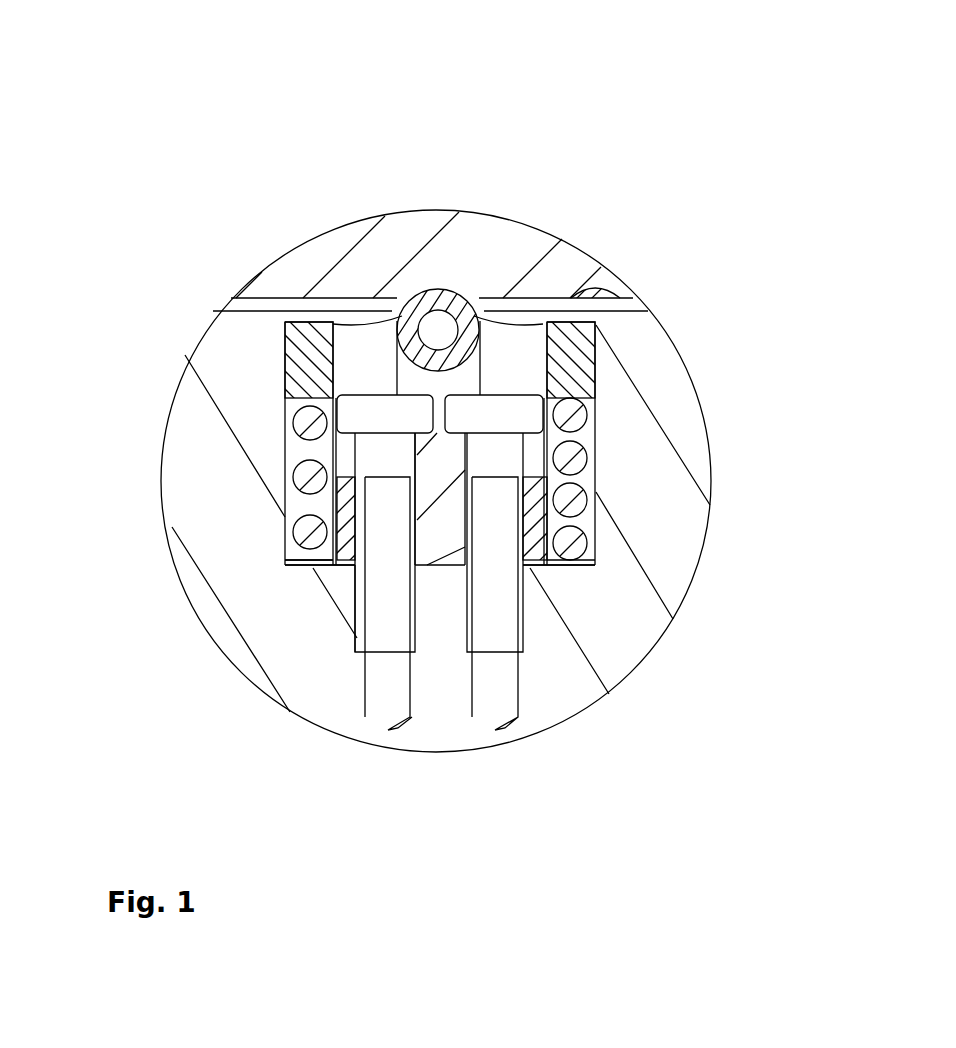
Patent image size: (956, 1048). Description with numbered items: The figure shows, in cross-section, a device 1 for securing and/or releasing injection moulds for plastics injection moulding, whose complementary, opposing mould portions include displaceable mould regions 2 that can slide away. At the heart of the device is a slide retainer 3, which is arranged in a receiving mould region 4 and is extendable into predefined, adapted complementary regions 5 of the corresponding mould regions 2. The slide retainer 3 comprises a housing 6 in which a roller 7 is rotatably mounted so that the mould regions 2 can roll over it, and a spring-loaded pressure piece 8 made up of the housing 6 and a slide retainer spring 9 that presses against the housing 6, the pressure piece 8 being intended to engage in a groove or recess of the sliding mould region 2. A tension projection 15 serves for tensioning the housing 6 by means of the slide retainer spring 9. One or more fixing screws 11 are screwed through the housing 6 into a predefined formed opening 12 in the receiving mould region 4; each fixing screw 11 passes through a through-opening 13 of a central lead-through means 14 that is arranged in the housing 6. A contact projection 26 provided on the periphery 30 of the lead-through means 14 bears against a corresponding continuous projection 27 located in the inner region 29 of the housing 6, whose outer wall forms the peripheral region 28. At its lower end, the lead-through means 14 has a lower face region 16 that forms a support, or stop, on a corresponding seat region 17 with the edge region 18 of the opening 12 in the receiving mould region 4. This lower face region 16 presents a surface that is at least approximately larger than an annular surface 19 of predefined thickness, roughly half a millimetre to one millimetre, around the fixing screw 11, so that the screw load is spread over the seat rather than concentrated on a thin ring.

The device for securing and/or releasing injection moulds 1 is at (247, 157).
The mould region that can slide away 2 is at (447, 223).
The slide retainer 3 is at (595, 333).
The receiving mould region 4 is at (627, 565).
The complementary region 5 is at (297, 290).
The housing 6 is at (595, 371).
The roller 7 is at (446, 293).
The spring-loaded pressure piece 8 is at (597, 410).
The slide retainer spring 9 is at (572, 462).
The fixing screw 11 is at (367, 700).
The opening 12 is at (526, 676).
The through-opening 13 is at (537, 567).
The central lead-through means 14 is at (355, 568).
The pre-loading projection 15 is at (303, 397).
The lower face region 16 is at (440, 570).
The corresponding seat region 17 is at (355, 566).
The edge region 18 is at (422, 570).
The annular surface 19 is at (355, 569).
The contact projection 26 is at (345, 476).
The continuous projection 27 is at (528, 481).
The peripheral region 28 is at (282, 365).
The inner region 29 is at (535, 490).
The periphery 30 is at (335, 449).